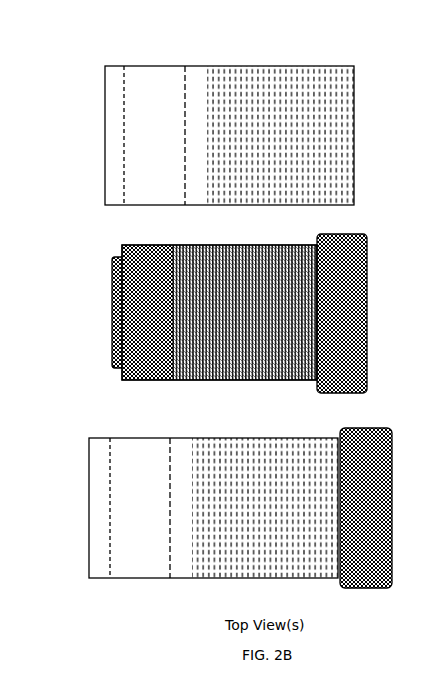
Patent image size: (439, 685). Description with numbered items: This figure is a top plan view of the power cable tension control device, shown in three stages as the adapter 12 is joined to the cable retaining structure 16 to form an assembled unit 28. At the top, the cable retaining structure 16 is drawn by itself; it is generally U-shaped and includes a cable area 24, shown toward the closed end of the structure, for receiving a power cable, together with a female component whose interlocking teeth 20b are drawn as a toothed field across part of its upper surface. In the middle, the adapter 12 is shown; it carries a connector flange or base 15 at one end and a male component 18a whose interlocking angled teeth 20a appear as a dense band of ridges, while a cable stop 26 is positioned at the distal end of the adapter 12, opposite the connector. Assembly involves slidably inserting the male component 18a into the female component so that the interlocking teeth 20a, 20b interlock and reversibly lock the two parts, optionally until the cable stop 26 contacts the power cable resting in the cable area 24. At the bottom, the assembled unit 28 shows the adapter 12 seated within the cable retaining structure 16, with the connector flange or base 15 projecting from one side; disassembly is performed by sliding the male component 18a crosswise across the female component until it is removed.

The adapter 12 is at (238, 324).
The connector flange or base 15 is at (349, 315).
The cable retaining structure 16 is at (208, 113).
The male component 18a is at (206, 330).
The interlocking teeth 20a is at (218, 381).
The interlocking teeth 20b is at (235, 84).
The cable area 24 is at (126, 118).
The cable stop 26 is at (106, 313).
The assembled unit 28 is at (72, 527).